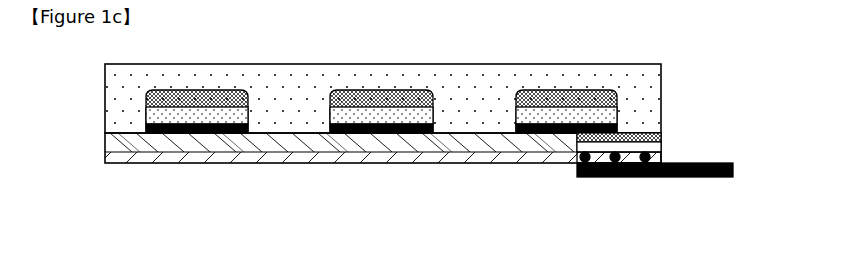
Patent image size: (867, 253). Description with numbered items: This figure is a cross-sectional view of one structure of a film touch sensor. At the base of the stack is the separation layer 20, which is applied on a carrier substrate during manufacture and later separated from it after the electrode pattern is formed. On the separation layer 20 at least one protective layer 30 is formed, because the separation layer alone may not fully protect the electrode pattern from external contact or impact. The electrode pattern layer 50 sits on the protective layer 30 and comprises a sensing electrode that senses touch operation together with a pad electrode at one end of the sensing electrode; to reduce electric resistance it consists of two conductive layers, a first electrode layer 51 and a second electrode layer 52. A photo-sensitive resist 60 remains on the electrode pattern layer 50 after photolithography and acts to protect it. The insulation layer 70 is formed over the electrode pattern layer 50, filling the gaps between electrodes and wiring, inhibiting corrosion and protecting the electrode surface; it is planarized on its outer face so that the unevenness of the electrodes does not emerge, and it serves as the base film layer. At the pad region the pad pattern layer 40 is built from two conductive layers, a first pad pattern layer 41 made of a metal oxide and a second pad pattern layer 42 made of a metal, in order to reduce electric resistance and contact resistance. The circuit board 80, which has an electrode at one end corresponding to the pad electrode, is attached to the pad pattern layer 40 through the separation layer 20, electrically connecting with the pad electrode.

The separation layer 20 is at (661, 155).
The protective layer 30 is at (105, 152).
The pad pattern layer 40 is at (674, 115).
The first pad pattern layer 41 is at (661, 141).
The second pad pattern layer 42 is at (661, 132).
The electrode pattern layer 50 is at (325, 113).
The first electrode layer 51 is at (146, 128).
The second electrode layer 52 is at (146, 115).
The photo-sensitive resist 60 is at (143, 91).
The insulation layer 70 is at (662, 67).
The circuit board 80 is at (657, 178).